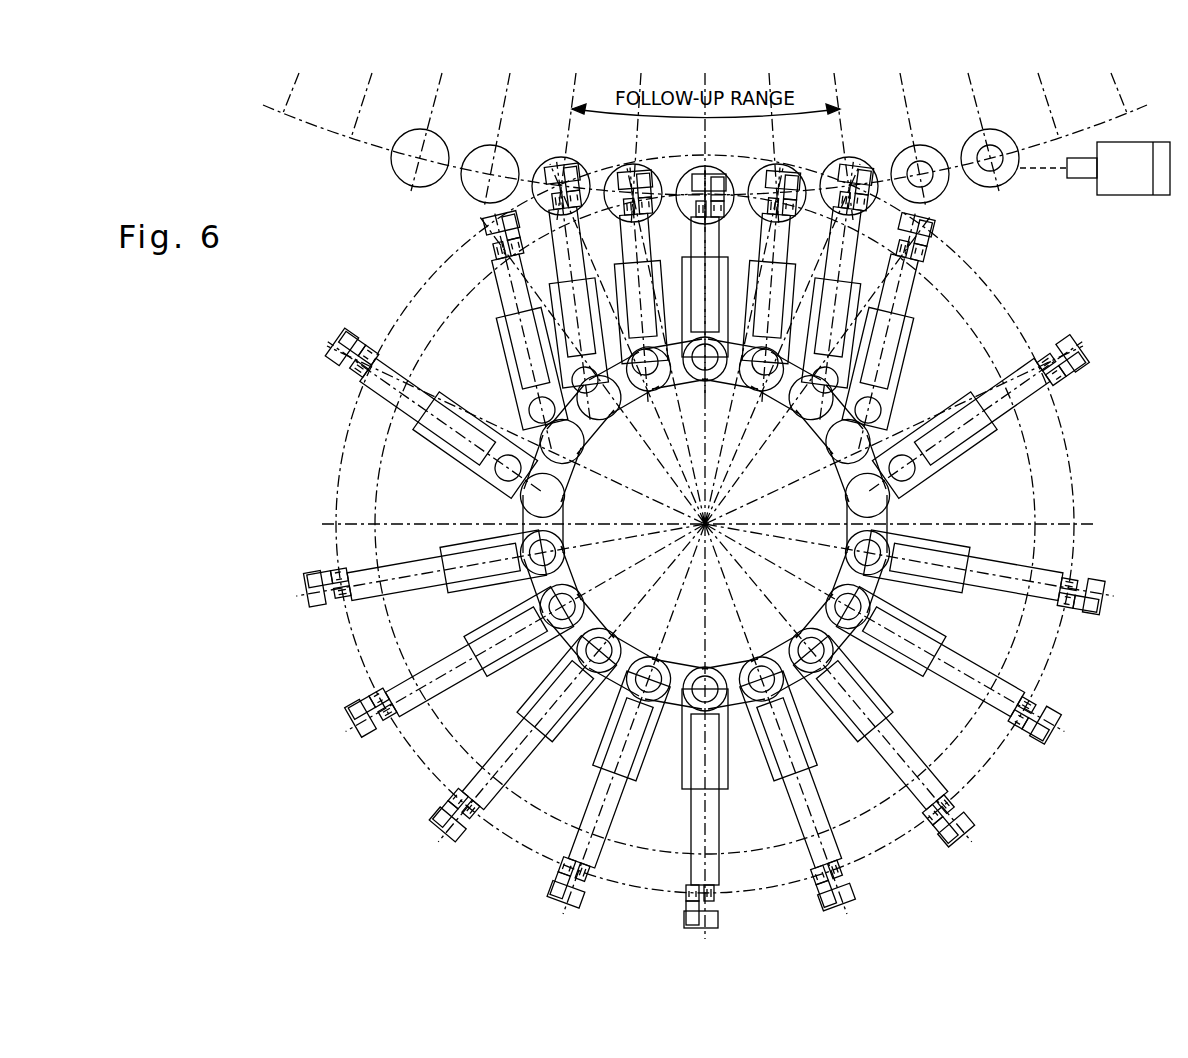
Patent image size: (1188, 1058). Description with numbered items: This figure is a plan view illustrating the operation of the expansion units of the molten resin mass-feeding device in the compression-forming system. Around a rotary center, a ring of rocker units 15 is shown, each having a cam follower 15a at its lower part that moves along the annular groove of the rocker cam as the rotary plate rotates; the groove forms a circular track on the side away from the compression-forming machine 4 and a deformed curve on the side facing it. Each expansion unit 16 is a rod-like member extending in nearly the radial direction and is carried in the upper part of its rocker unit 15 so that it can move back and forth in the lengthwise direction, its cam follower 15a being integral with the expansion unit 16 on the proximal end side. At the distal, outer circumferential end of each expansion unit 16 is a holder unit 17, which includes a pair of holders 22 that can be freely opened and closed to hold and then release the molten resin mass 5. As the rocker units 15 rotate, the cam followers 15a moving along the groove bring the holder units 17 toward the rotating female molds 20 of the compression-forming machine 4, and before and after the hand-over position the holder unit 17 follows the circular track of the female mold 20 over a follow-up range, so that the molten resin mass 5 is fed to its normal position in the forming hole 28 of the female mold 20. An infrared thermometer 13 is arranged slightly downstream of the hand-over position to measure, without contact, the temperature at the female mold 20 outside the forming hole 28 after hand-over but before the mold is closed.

The compression-forming machine 4 is at (874, 99).
The molten resin mass 5 is at (935, 199).
The infrared thermometer 13 is at (1128, 196).
The rocker unit 15 is at (960, 538).
The cam follower 15a is at (890, 593).
The expansion unit 16 is at (993, 590).
The holder unit 17 is at (1098, 570).
The female mold 20 is at (402, 164).
The holders 22 is at (1093, 603).
The forming hole 28 is at (920, 161).